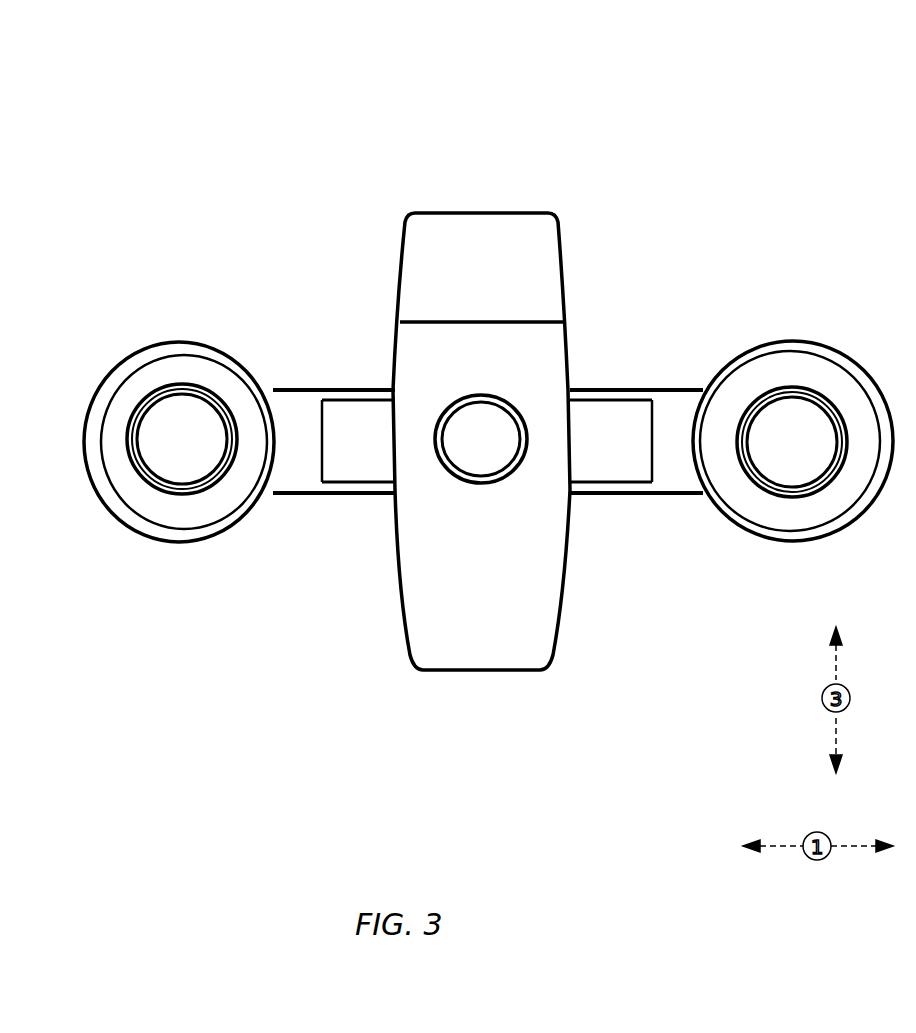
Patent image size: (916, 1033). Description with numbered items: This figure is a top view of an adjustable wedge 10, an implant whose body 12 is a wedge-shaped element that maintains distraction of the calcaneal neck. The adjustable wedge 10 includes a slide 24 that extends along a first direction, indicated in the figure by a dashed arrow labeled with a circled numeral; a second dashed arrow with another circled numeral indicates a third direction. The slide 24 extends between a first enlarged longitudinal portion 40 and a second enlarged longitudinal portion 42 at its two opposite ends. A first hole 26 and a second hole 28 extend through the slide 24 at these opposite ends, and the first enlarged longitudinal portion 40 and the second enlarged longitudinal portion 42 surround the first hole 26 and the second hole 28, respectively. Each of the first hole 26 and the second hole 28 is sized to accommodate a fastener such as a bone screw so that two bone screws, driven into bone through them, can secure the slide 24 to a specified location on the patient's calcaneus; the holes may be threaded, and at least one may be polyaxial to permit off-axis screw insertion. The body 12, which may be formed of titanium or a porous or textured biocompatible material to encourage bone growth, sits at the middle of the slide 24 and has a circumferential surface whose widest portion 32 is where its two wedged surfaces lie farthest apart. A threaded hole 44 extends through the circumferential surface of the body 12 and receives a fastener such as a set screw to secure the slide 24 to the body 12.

The adjustable wedge 10 is at (108, 130).
The body 12 is at (428, 627).
The slide 24 is at (329, 390).
The first hole 26 is at (188, 385).
The second hole 28 is at (790, 387).
The widest portion 32 is at (412, 438).
The first enlarged longitudinal portion 40 is at (190, 545).
The second enlarged longitudinal portion 42 is at (786, 543).
The threaded hole 44 is at (521, 408).